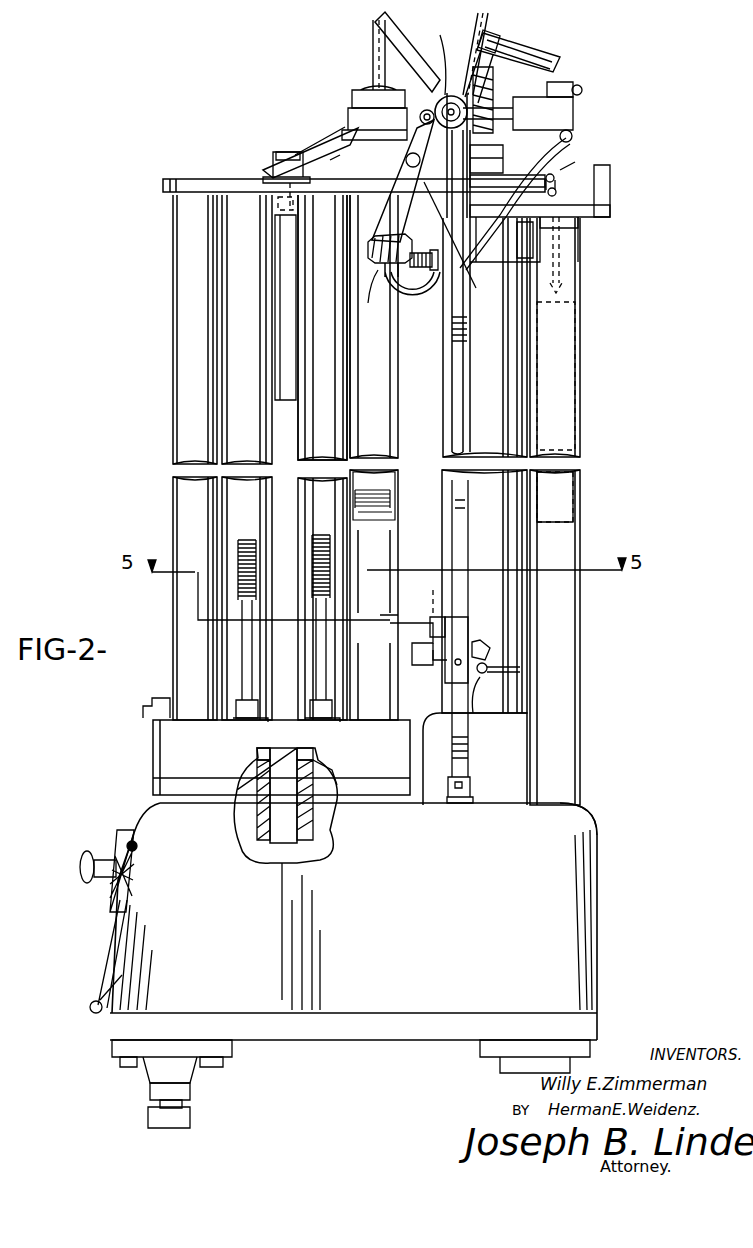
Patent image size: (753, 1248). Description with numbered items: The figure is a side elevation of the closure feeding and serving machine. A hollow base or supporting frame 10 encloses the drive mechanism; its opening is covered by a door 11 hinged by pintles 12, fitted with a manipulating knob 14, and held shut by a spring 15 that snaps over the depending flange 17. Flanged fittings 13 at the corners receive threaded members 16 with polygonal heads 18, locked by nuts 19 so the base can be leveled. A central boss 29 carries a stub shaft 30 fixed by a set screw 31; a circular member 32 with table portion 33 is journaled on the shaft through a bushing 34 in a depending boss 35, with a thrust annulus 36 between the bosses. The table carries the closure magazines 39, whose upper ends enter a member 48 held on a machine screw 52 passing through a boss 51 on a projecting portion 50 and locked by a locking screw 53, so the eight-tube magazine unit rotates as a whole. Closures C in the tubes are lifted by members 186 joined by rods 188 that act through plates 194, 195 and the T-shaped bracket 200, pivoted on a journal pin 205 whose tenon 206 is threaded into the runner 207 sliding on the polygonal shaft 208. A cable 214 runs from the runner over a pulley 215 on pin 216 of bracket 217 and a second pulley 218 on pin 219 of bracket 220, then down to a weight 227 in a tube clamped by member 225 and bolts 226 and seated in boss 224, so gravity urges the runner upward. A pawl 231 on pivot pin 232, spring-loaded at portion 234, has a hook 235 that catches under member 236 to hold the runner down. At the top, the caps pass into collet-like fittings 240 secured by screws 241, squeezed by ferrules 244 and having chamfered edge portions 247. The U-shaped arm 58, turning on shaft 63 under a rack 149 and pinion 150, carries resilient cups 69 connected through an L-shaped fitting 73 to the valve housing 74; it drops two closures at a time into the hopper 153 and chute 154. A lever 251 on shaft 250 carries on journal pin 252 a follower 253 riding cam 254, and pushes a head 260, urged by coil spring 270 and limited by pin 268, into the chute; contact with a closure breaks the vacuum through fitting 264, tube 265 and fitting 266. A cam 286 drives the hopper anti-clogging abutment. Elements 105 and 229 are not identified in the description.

The hollow base or supporting frame 10 is at (598, 860).
The closure or door 11 is at (120, 938).
The pintles 12 is at (92, 1015).
The flanged fittings 13 is at (234, 1050).
The manipulating knob 14 is at (84, 883).
The resilient plate or spring 15 is at (137, 849).
The threaded members 16 is at (184, 1106).
The depending flange 17 is at (126, 828).
The polygonal heads 18 is at (190, 1124).
The locking nuts 19 is at (192, 1089).
The central hollow boss portion 29 is at (258, 795).
The stub shaft 30 is at (278, 848).
The set screw 31 is at (315, 820).
The circular member 32 is at (153, 750).
The top or table portion 33 is at (155, 708).
The bearing member or bushing 34 is at (313, 755).
The boss portion 35 is at (257, 760).
The thrust bearing or annulus 36 is at (332, 770).
The tubular members or closure magazines 39 is at (300, 298).
The member 48 is at (175, 185).
The projecting portion 50 is at (330, 140).
The boss portion 51 is at (272, 158).
The machine screw 52 is at (288, 152).
The locking screw 53 is at (283, 192).
The U-shaped member 58 is at (372, 30).
The shaft 63 is at (518, 113).
The closure engaging cups 69 is at (500, 40).
The L-shaped fitting 73 is at (583, 87).
The valve chamber housing 74 is at (576, 105).
The tube 105 is at (345, 352).
The toothed rack 149 is at (488, 78).
The toothed wheel or pinion 150 is at (436, 103).
The hopper 153 is at (480, 32).
The closure receiving and conveying chute 154 is at (468, 305).
The spaced members 186 is at (315, 598).
The rod 188 is at (320, 652).
The laterally extending member or plate 194 is at (322, 720).
The laterally extending member or plate 195 is at (262, 720).
The inverted T-shaped bracket 200 is at (406, 648).
The journal pin 205 is at (432, 617).
The threaded tenon portion 206 is at (417, 595).
The runner 207 is at (445, 680).
The vertically disposed shaft 208 is at (470, 753).
The flexible cable 214 is at (451, 549).
The pulley or sheave wheel 215 is at (486, 159).
The pin 216 is at (462, 197).
The bracket 217 is at (580, 222).
The second pulley or sheave wheel 218 is at (557, 190).
The pin 219 is at (555, 176).
The bracket 220 is at (575, 162).
The boss portion 224 is at (598, 812).
The clamping member 225 is at (610, 212).
The bolts 226 is at (543, 218).
The cylindrically-shaped weight 227 is at (575, 412).
The rod 229 is at (580, 290).
The latching pawl 231 is at (520, 670).
The pivot pin 232 is at (470, 678).
The portion of pawl 234 is at (480, 640).
The latch or hook portion 235 is at (492, 704).
The laterally extending member 236 is at (472, 786).
The cylindrically shaped members or fittings 240 is at (322, 155).
The screws 241 is at (358, 125).
The ferrules or annulae 244 is at (352, 102).
The chamfered edge portions 247 is at (388, 24).
The shaft 250 is at (406, 158).
The arm or lever 251 is at (408, 205).
The journal pin 252 is at (438, 131).
The roller or cam follower 253 is at (440, 140).
The cam member 254 is at (441, 61).
The head 260 is at (412, 282).
The hollow fitting 264 is at (374, 294).
The flexible tube 265 is at (510, 222).
The fitting 266 is at (573, 134).
The stop or abutment pin 268 is at (406, 236).
The expansive coil spring 270 is at (423, 250).
The cam member 286 is at (359, 161).
The caps or closures C is at (398, 494).